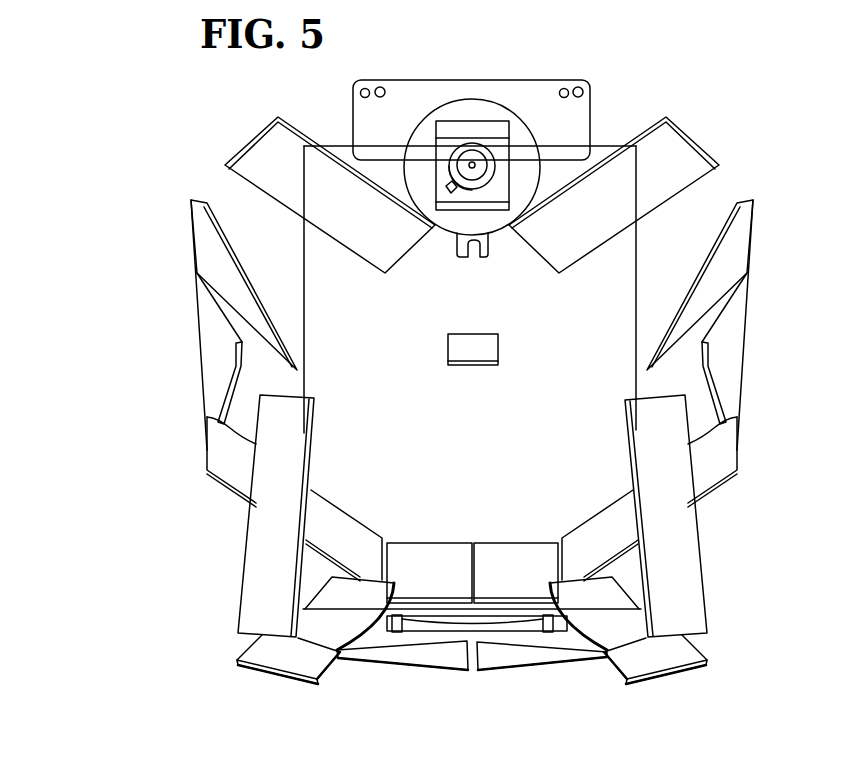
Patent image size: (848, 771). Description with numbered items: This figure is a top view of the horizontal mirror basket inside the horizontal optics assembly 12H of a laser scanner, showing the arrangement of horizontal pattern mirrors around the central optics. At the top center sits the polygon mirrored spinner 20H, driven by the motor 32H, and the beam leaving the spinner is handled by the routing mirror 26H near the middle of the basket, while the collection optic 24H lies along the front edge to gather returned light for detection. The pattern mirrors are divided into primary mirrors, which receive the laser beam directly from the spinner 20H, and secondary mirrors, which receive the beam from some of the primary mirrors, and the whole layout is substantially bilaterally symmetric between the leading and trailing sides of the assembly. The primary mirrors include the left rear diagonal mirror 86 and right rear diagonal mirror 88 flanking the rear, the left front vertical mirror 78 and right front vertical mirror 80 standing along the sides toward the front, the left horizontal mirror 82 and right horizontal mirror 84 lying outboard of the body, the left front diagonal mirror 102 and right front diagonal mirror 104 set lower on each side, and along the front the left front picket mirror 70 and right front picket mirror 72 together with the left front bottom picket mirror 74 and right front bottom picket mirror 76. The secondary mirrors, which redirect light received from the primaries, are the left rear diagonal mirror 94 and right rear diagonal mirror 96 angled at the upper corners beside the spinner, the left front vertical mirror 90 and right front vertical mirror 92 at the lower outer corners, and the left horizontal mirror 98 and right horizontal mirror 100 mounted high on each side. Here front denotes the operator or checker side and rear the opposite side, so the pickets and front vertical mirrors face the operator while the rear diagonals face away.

The horizontal optics assembly 12H is at (146, 131).
The polygon mirrored spinner 20H is at (470, 120).
The motor 32H is at (520, 127).
The routing mirror 26H is at (472, 353).
The collection optic 24H is at (508, 623).
The left front picket mirror 70 is at (420, 653).
The right front picket mirror 72 is at (500, 655).
The left front bottom picket mirror 74 is at (428, 553).
The right front bottom picket mirror 76 is at (507, 553).
The left front vertical mirror 78 is at (256, 552).
The right front vertical mirror 80 is at (688, 572).
The left horizontal mirror 82 is at (212, 351).
The right horizontal mirror 84 is at (728, 357).
The left rear diagonal mirror 86 is at (205, 253).
The right rear diagonal mirror 88 is at (742, 253).
The left front vertical mirror 90 is at (292, 660).
The right front vertical mirror 92 is at (660, 662).
The left rear diagonal mirror 94 is at (255, 140).
The right rear diagonal mirror 96 is at (683, 152).
The left horizontal mirror 98 is at (236, 207).
The right horizontal mirror 100 is at (703, 197).
The left front diagonal mirror 102 is at (221, 447).
The right front diagonal mirror 104 is at (730, 446).